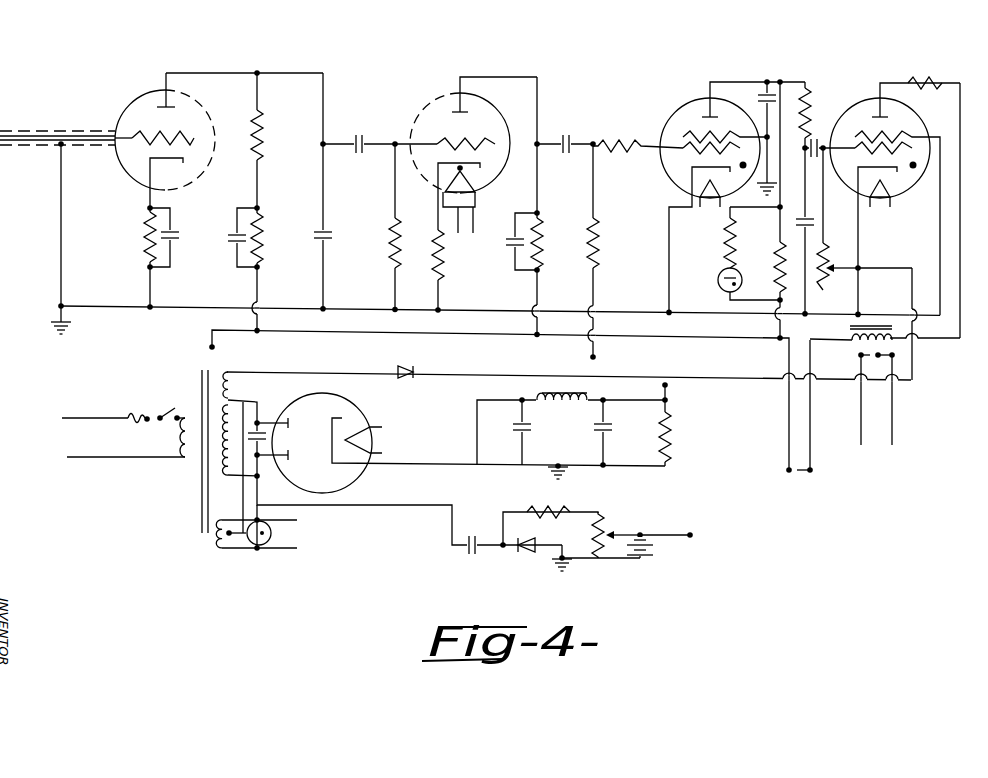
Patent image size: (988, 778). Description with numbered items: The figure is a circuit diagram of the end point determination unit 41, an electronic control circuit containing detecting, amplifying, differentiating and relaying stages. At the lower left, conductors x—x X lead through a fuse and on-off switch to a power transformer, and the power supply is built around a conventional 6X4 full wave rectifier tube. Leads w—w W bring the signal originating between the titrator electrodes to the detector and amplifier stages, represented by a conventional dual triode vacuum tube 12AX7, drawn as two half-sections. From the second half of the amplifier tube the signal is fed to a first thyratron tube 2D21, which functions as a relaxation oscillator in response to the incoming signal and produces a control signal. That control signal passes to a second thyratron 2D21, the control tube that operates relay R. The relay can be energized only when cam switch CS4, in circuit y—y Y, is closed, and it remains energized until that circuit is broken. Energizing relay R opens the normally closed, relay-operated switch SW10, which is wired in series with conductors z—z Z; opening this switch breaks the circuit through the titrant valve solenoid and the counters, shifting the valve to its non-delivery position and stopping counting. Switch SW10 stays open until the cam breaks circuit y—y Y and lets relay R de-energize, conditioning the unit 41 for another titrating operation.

The end point determination unit 41 is at (494, 322).
The relay-operated switch SW10 is at (917, 410).
The cam switch CS4 is at (802, 443).
The relay R is at (900, 335).
The full wave rectifier tube 6X4 is at (354, 479).
The dual triode vacuum tube 12AX7 is at (129, 60).
The thyratron tube 2D21 is at (696, 91).
The leads w-w W is at (45, 321).
The conductors x-x X is at (114, 437).
The circuit y-y Y is at (795, 434).
The conductors z-z Z is at (875, 458).